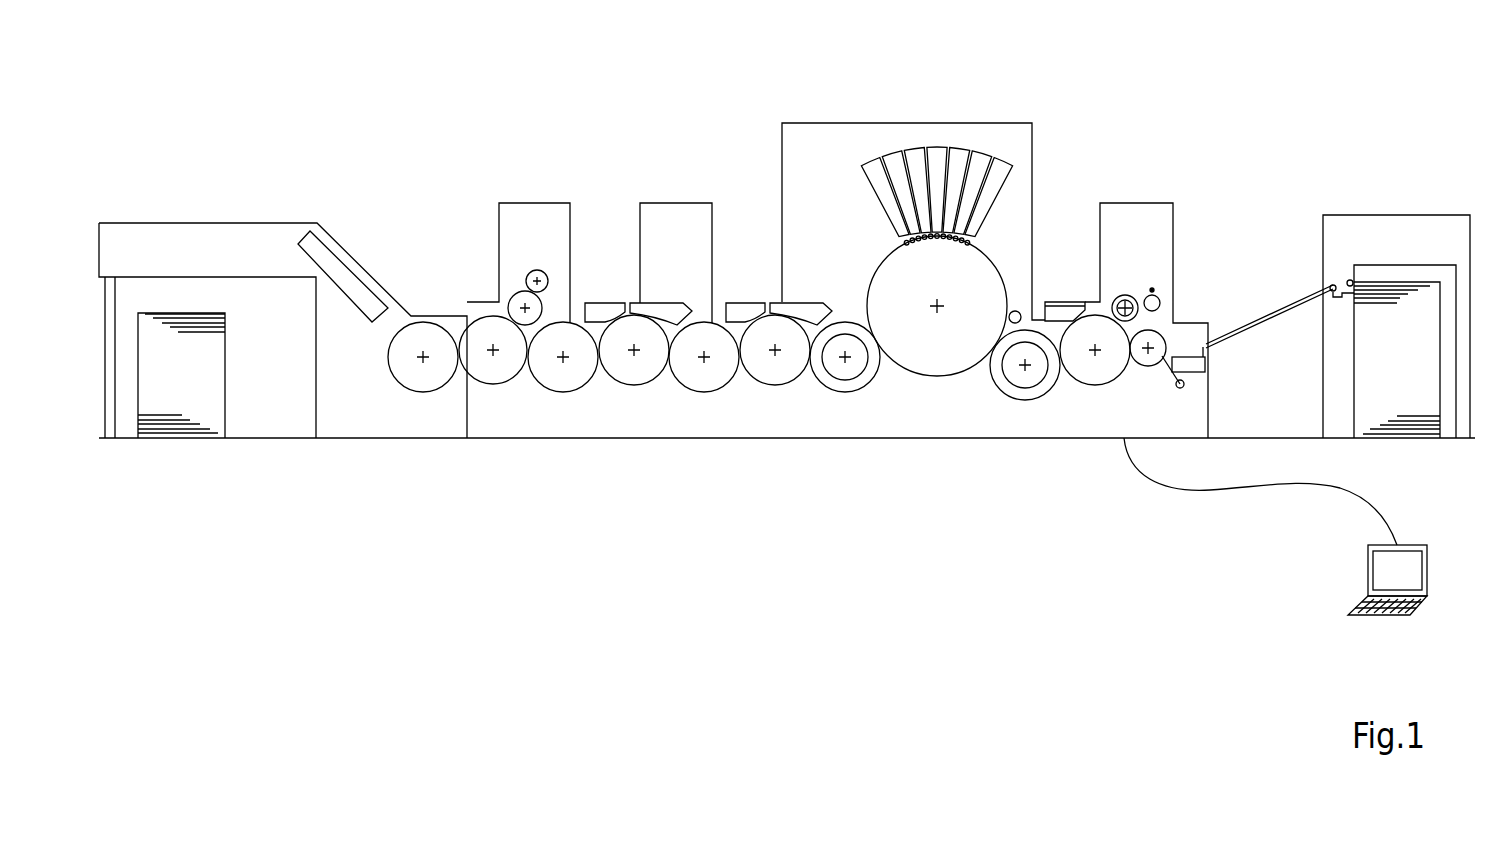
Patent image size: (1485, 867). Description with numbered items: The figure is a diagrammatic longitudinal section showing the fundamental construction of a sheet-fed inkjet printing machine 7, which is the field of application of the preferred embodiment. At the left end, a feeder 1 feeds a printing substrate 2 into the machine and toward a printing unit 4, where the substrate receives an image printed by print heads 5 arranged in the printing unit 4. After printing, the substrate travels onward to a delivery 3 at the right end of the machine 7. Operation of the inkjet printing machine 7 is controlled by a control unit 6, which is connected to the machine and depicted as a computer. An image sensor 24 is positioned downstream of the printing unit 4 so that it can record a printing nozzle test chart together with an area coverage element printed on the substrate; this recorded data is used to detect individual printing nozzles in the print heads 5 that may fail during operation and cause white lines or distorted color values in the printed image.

The feeder 1 is at (218, 252).
The printing substrate 2 is at (1000, 258).
The delivery 3 is at (1408, 282).
The printing unit 4 is at (843, 120).
The print heads 5 is at (937, 147).
The control unit 6 is at (1372, 572).
The inkjet printing machine 7 is at (1256, 40).
The image sensor 24 is at (1052, 316).